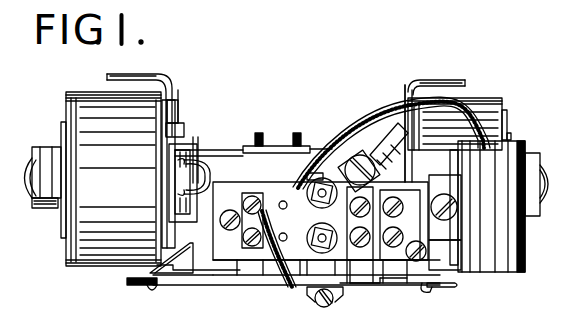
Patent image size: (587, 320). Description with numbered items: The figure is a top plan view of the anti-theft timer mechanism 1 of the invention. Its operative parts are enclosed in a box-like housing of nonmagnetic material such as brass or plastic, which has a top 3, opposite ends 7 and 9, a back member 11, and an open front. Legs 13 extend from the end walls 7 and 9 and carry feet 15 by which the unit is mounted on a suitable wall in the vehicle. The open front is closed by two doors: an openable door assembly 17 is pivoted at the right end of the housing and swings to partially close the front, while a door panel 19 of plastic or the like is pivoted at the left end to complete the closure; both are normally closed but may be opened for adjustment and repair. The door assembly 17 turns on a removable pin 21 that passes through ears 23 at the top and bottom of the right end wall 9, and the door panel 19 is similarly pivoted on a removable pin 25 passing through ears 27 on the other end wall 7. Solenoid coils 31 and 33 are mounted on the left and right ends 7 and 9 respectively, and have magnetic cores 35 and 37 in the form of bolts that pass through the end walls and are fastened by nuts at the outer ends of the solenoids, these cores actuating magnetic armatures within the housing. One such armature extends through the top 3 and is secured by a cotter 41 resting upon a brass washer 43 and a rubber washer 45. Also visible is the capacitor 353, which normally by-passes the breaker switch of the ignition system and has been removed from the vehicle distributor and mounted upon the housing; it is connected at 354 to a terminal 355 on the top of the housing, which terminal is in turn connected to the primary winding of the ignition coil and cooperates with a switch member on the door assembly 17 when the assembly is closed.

The timer mechanism 1 is at (318, 104).
The top 3 is at (242, 150).
The end 7 is at (163, 179).
The end 9 is at (413, 157).
The back member 11 is at (207, 150).
The legs 13 is at (177, 92).
The feet 15 is at (152, 75).
The door assembly 17 is at (380, 290).
The door panel 19 is at (210, 286).
The removable pin 21 is at (445, 287).
The ears 23 is at (429, 292).
The removable pin 25 is at (136, 286).
The ears 27 is at (153, 290).
The solenoid coil 31 is at (84, 95).
The solenoid coil 33 is at (490, 98).
The magnetic core 35 is at (24, 158).
The magnetic core 37 is at (546, 168).
The cotter 41 is at (205, 160).
The brass washer 43 is at (176, 166).
The rubber washer 45 is at (172, 214).
The capacitor 353 is at (498, 270).
The connection 354 is at (350, 160).
The terminal 355 is at (391, 143).